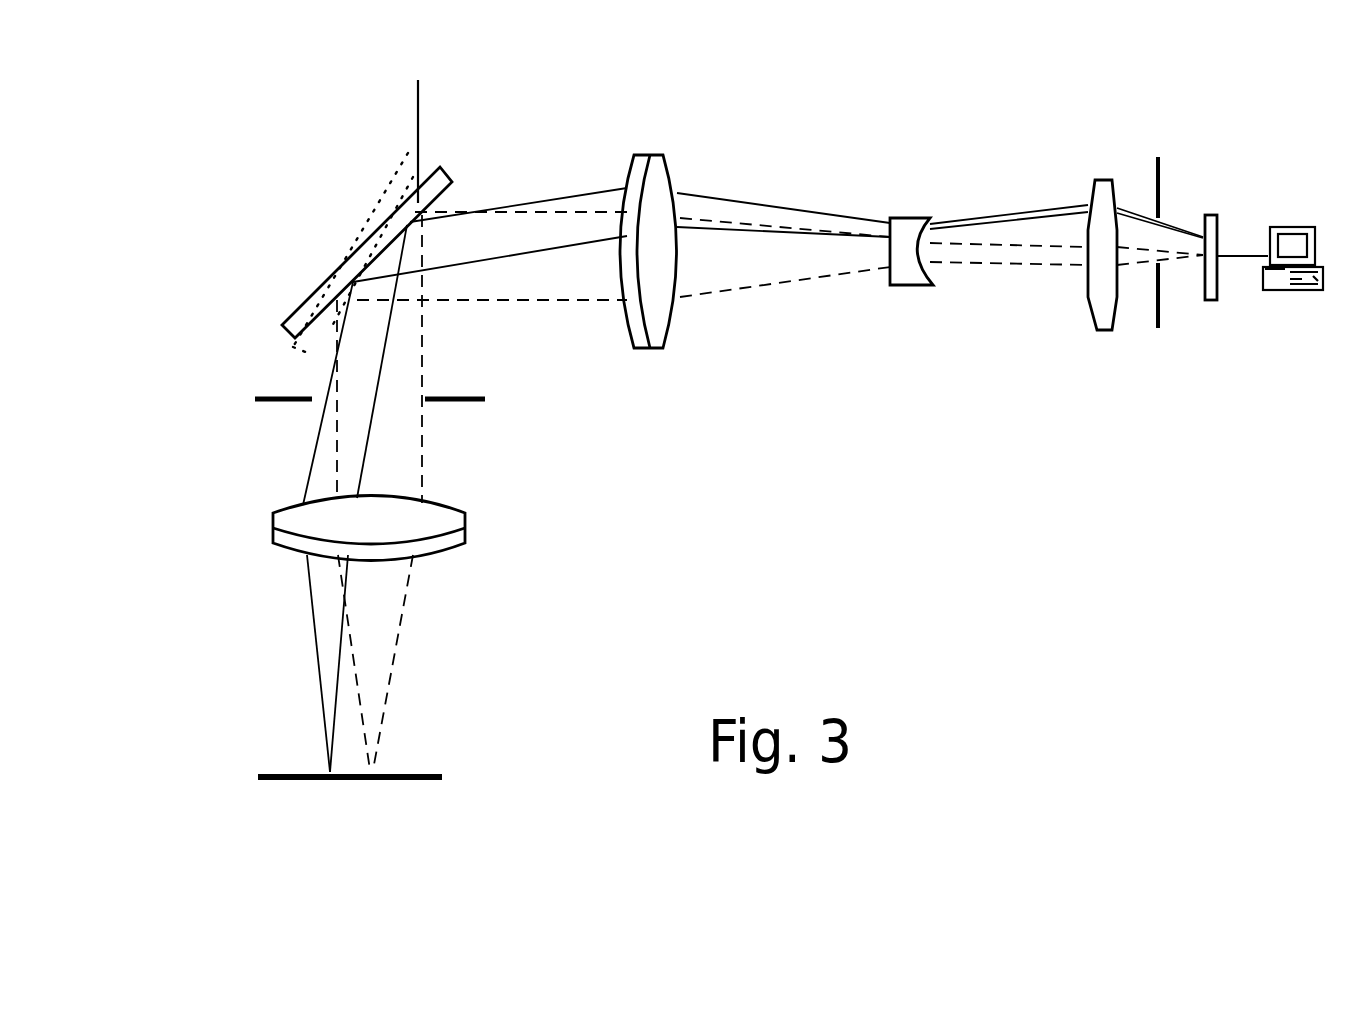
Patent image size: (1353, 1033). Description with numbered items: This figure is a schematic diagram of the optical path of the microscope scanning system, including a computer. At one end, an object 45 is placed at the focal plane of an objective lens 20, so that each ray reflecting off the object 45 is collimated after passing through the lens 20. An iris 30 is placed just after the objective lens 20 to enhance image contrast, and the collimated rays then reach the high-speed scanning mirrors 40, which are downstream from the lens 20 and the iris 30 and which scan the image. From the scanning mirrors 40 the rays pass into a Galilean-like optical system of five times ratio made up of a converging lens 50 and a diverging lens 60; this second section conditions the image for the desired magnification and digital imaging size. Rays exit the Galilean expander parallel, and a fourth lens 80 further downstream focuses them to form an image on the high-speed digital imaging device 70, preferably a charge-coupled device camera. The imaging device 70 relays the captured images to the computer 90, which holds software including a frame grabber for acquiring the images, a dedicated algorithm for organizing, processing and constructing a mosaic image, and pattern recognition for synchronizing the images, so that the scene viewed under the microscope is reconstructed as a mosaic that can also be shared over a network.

The objective lens 20 is at (358, 516).
The iris 30 is at (270, 390).
The high-speed scanning mirrors 40 is at (368, 191).
The object 45 is at (400, 772).
The converging lens 50 is at (651, 298).
The diverging lens 60 is at (902, 263).
The high-speed digital imaging device 70 is at (1218, 223).
The fourth lens 80 is at (1102, 302).
The computer 90 is at (1325, 284).